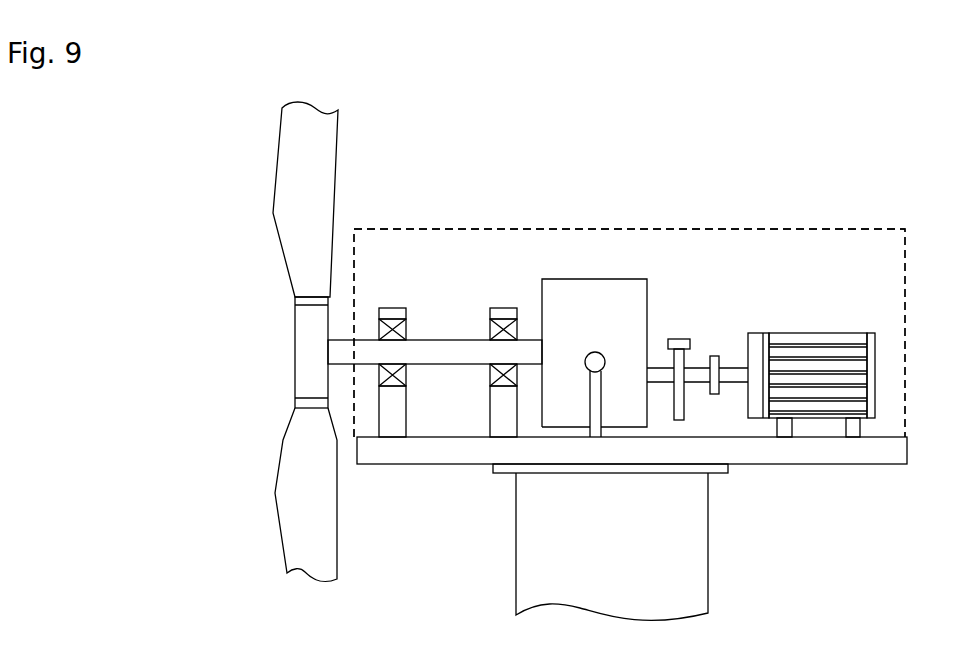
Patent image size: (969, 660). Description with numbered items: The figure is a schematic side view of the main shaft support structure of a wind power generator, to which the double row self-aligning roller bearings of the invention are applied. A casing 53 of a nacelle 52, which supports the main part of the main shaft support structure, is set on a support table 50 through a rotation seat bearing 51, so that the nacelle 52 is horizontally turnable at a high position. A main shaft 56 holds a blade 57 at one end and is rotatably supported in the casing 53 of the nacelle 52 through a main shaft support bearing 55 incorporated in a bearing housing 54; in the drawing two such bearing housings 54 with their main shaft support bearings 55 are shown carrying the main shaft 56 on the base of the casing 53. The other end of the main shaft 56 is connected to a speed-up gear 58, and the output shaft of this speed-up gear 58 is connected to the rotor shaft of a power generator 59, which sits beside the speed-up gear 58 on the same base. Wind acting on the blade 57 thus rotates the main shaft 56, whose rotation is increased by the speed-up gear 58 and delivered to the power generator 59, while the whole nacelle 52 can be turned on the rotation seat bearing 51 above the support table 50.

The support table 50 is at (683, 533).
The rotation seat bearing 51 is at (718, 474).
The nacelle 52 is at (450, 217).
The casing 53 is at (770, 228).
The bearing housing 54 is at (388, 308).
The main shaft support bearing 55 is at (393, 320).
The main shaft 56 is at (452, 364).
The blade 57 is at (293, 165).
The speed-up gear 58 is at (613, 300).
The power generator 59 is at (838, 333).